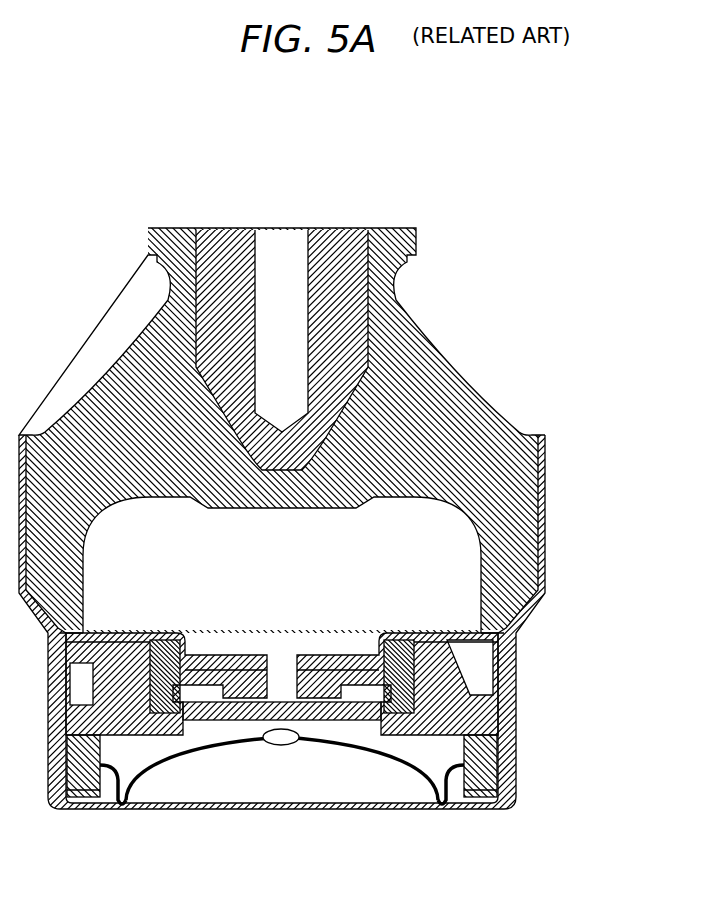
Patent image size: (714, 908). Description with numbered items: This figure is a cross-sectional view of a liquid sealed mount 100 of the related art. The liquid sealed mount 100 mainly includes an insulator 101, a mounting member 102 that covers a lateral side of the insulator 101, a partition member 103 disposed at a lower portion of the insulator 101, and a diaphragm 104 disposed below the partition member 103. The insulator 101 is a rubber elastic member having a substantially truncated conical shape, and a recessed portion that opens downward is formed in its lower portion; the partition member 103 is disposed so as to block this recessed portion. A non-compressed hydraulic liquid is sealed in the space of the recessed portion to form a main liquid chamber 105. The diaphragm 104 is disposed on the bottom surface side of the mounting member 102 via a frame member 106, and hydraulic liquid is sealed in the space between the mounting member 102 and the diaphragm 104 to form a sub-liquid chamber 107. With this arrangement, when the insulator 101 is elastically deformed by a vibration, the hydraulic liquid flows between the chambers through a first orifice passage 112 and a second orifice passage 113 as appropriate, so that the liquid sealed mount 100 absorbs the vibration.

The liquid sealed mount 100 is at (281, 133).
The insulator 101 is at (438, 378).
The mounting member 102 is at (548, 513).
The partition member 103 is at (126, 740).
The diaphragm 104 is at (378, 769).
The main liquid chamber 105 is at (249, 583).
The frame member 106 is at (76, 806).
The sub-liquid chamber 107 is at (325, 738).
The first orifice passage 112 is at (272, 746).
The second orifice passage 113 is at (490, 682).